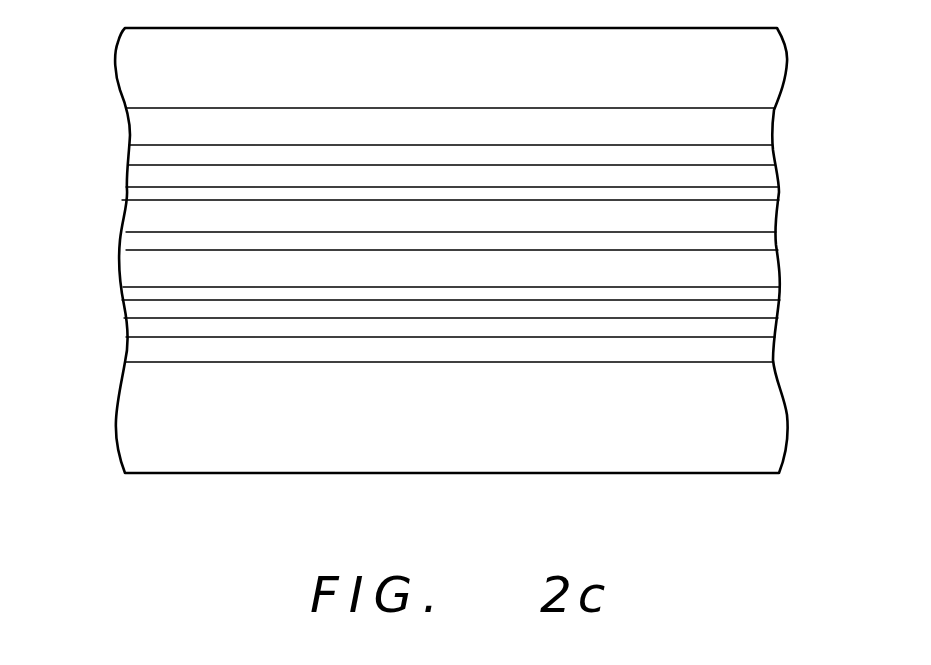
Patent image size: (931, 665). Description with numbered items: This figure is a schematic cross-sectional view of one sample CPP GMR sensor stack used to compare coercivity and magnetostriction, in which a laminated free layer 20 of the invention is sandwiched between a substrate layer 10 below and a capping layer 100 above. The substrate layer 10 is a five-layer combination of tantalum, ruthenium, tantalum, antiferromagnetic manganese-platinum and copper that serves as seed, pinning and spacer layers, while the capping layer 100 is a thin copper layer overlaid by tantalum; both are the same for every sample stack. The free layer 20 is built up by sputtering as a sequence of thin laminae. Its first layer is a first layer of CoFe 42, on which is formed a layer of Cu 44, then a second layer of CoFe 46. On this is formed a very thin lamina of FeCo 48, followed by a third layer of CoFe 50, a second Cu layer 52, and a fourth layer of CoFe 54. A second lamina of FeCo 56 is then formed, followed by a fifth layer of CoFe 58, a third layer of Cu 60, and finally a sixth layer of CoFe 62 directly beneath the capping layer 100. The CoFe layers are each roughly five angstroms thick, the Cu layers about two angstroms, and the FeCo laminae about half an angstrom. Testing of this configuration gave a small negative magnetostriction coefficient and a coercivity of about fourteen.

The capping layer 100 is at (110, 30).
The free layer 20 is at (112, 110).
The substrate layer 10 is at (111, 368).
The sixth layer of CoFe 62 is at (762, 117).
The third layer of Cu 60 is at (770, 144).
The fifth layer of CoFe 58 is at (768, 171).
The second lamina of FeCo 56 is at (770, 193).
The fourth layer of CoFe 54 is at (750, 218).
The second Cu layer 52 is at (770, 236).
The third layer of CoFe 50 is at (763, 262).
The lamina of FeCo 48 is at (770, 287).
The second layer of CoFe 46 is at (770, 306).
The layer of Cu 44 is at (762, 326).
The first layer of CoFe 42 is at (755, 347).